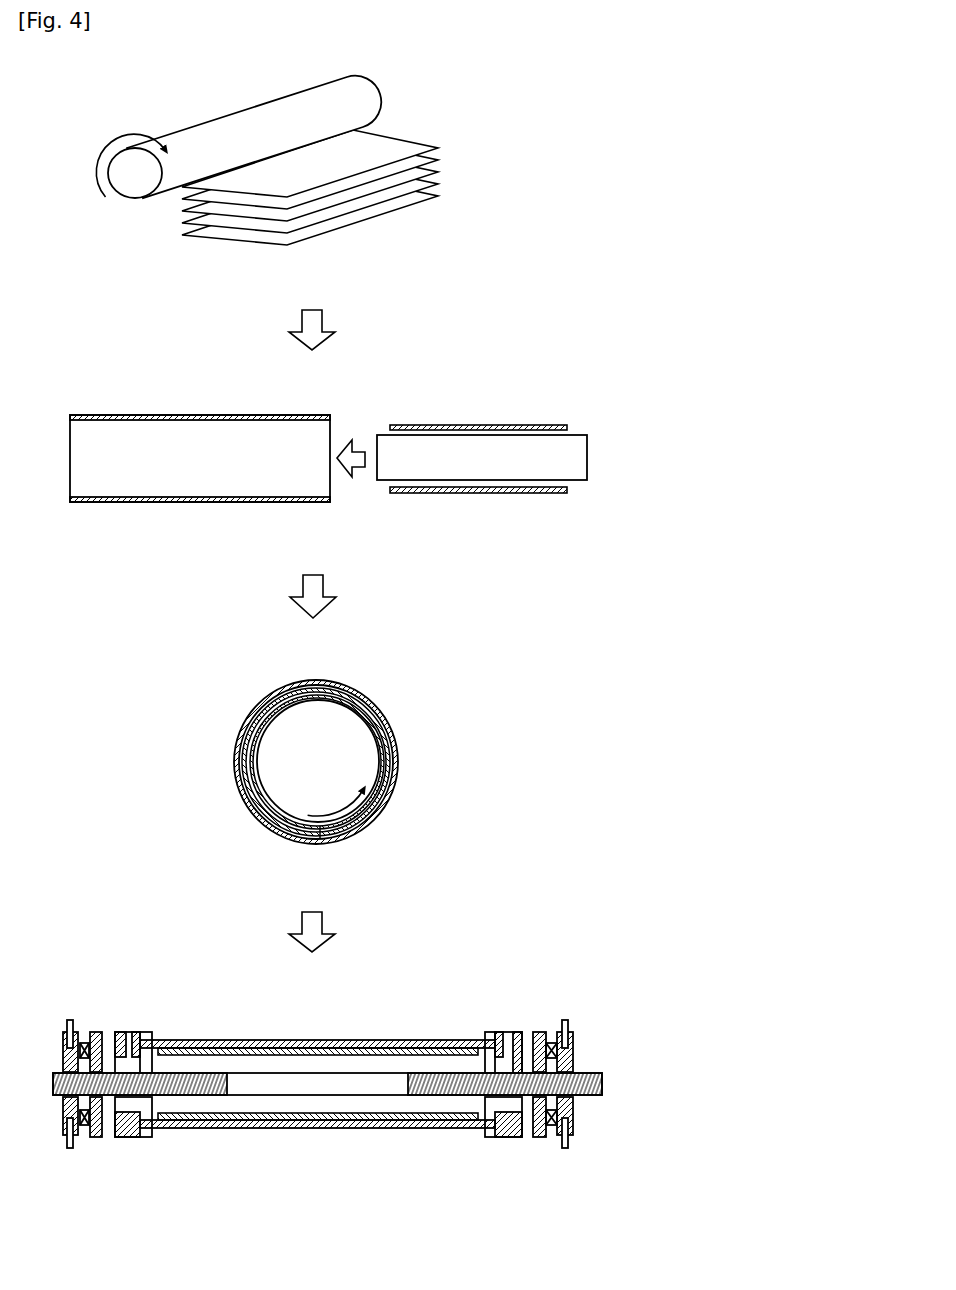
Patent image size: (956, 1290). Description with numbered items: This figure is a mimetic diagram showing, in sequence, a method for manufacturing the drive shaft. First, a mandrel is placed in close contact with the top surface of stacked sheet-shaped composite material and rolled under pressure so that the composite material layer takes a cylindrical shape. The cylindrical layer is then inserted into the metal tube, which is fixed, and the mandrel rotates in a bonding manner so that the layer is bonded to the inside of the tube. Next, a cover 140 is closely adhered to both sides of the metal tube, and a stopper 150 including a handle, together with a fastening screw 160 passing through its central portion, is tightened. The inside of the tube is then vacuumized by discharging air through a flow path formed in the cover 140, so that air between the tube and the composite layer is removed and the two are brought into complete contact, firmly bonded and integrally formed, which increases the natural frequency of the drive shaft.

The cover 140 is at (502, 1032).
The stopper 150 is at (573, 1053).
The fastening screw 160 is at (603, 1082).